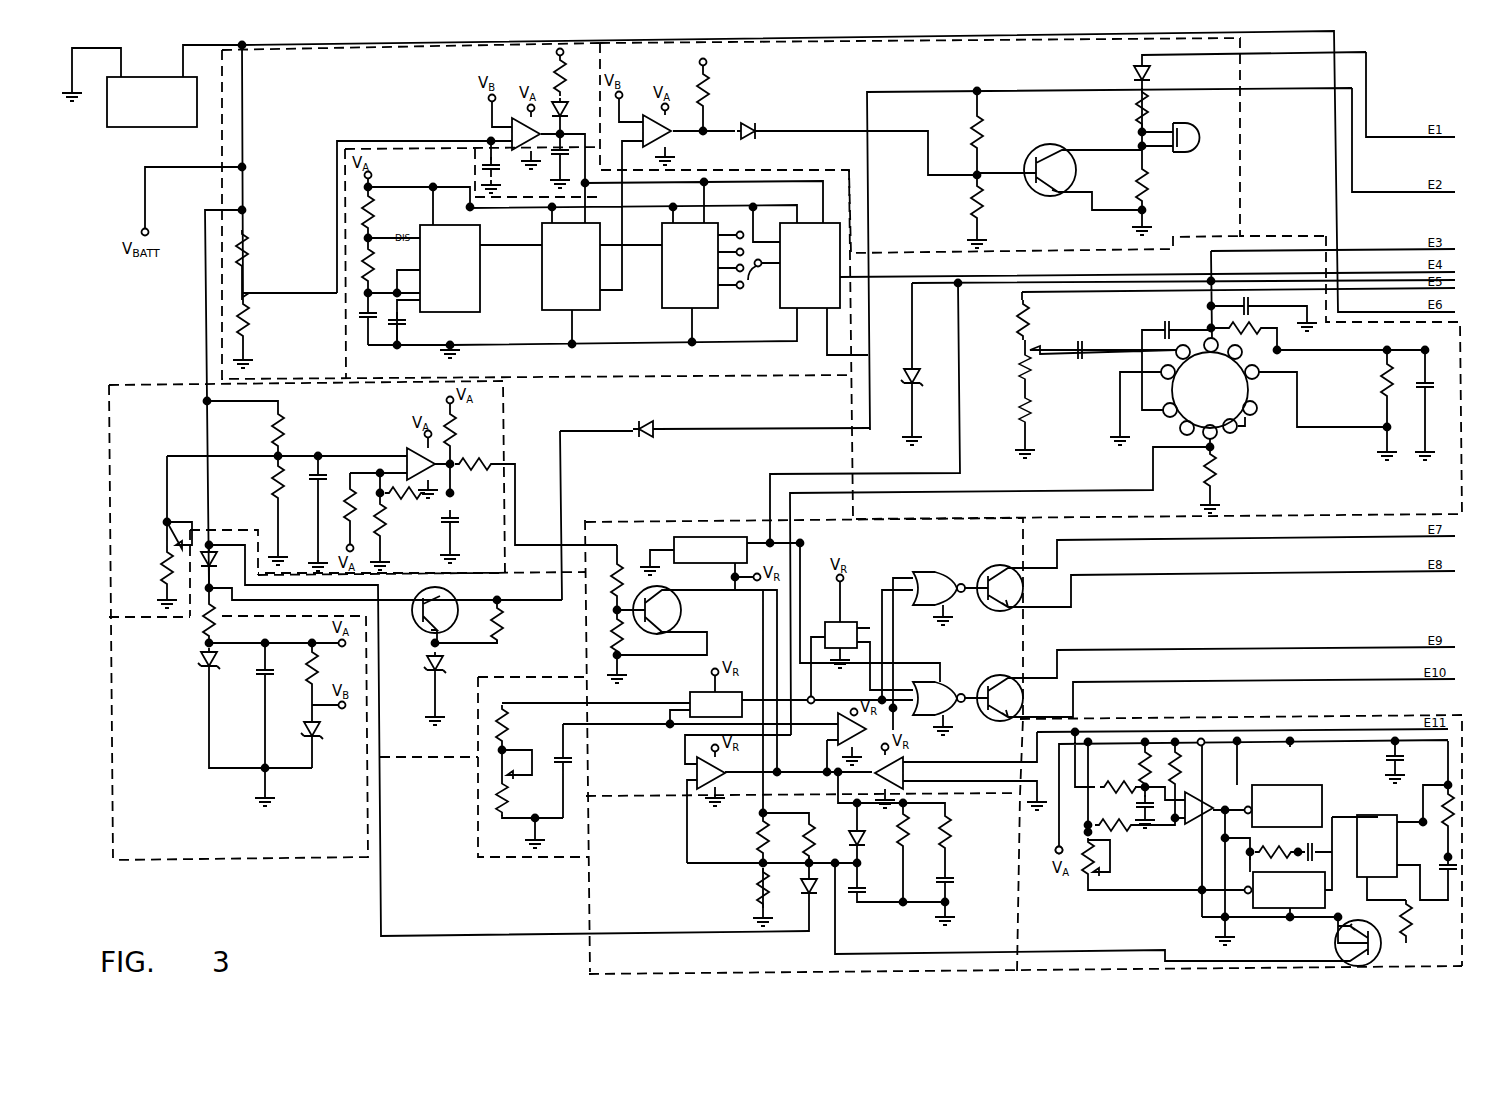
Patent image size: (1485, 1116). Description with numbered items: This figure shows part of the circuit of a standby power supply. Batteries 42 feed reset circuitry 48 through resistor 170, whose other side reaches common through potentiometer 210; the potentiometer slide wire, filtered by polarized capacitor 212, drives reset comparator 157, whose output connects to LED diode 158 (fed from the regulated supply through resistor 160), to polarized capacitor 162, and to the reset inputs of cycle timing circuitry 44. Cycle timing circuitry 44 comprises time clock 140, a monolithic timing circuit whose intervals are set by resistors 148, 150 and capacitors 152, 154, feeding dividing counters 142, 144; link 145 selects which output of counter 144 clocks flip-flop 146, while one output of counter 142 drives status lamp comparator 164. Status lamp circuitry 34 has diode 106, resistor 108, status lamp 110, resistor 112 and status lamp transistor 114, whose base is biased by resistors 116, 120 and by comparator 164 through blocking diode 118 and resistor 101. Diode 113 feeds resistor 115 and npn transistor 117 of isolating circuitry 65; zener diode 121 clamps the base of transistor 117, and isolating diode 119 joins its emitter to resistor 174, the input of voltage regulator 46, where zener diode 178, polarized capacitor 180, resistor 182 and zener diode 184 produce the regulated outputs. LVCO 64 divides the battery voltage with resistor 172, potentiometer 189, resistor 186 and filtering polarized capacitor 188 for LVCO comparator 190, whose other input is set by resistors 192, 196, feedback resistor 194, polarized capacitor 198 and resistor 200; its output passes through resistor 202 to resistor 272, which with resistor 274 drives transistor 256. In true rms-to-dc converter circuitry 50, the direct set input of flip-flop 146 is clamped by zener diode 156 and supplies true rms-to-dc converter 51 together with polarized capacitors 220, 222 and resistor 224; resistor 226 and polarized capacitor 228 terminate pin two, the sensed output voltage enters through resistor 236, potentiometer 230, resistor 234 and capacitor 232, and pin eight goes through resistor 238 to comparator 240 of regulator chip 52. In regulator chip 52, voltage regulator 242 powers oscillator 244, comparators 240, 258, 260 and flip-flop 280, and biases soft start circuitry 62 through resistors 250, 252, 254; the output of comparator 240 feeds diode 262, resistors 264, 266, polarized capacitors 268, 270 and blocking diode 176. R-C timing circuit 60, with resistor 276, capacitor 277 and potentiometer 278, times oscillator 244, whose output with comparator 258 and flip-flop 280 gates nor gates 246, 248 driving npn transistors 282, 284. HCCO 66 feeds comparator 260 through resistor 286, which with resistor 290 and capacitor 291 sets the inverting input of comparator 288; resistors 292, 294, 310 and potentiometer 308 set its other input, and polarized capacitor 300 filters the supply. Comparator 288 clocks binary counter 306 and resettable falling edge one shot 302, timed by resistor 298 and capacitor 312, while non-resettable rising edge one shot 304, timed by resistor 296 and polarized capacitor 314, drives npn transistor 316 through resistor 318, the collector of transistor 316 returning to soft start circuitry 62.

The batteries 42 is at (140, 127).
The reset circuitry 48 is at (537, 280).
The cycle timing circuitry 44 is at (472, 262).
The status lamp circuitry 34 is at (963, 145).
The true rms-to-dc converter circuitry 50 is at (1157, 377).
The resistor 170 is at (248, 247).
The potentiometer 210 is at (249, 317).
The resistor 148 is at (374, 210).
The resistor 150 is at (374, 262).
The capacitor 152 is at (364, 318).
The capacitor 154 is at (404, 325).
The time clock 140 is at (460, 312).
The counter 142 is at (542, 296).
The counter 144 is at (662, 296).
The link 145 is at (748, 280).
The flip-flop 146 is at (790, 308).
The reset comparator 157 is at (512, 125).
The polarized capacitor 212 is at (499, 172).
The LED diode 158 is at (552, 100).
The resistor 160 is at (556, 64).
The polarized capacitor 162 is at (550, 160).
The status lamp comparator 164 is at (668, 138).
The resistor 101 is at (708, 92).
The blocking diode 118 is at (748, 124).
The diode 106 is at (1150, 68).
The resistor 108 is at (1148, 103).
The status lamp 110 is at (1192, 152).
The resistor 112 is at (1148, 182).
The status lamp transistor 114 is at (1046, 196).
The resistor 116 is at (983, 130).
The resistor 120 is at (983, 200).
The zener diode 156 is at (921, 372).
The diode 113 is at (645, 437).
The resistor 236 is at (1031, 318).
The potentiometer 230 is at (1031, 366).
The resistor 234 is at (1031, 410).
The capacitor 232 is at (1082, 344).
The polarized capacitor 222 is at (1170, 312).
The polarized capacitor 220 is at (1250, 300).
The resistor 224 is at (1248, 322).
The polarized capacitor 228 is at (1428, 358).
The resistor 226 is at (1381, 378).
The true rms-to-dc converter 51 is at (1248, 390).
The resistor 238 is at (1216, 466).
The LVCO 64 is at (347, 619).
The resistor 172 is at (284, 428).
The resistor 186 is at (272, 482).
The filtering polarized capacitor 188 is at (312, 480).
The potentiometer 189 is at (160, 552).
The LVCO comparator 190 is at (410, 452).
The resistor 200 is at (456, 428).
The resistor 202 is at (470, 472).
The feedback resistor 194 is at (405, 499).
The resistor 192 is at (386, 520).
The resistor 196 is at (344, 500).
The polarized capacitor 198 is at (458, 524).
The isolating diode 119 is at (217, 566).
The resistor 174 is at (203, 618).
The npn transistor 117 is at (420, 625).
The resistor 115 is at (503, 622).
The zener diode 121 is at (444, 660).
The isolating circuitry 65 is at (485, 746).
The voltage regulator 46 is at (238, 738).
The zener diode 178 is at (201, 664).
The polarized capacitor 180 is at (260, 666).
The resistor 182 is at (318, 664).
The zener diode 184 is at (320, 728).
The regulator chip 52 is at (804, 745).
The R-C timing circuit 60 is at (533, 767).
The biasing and soft start circuitry 62 is at (1025, 936).
The HCCO 66 is at (1241, 840).
The voltage regulator 242 is at (716, 563).
The resistor 272 is at (622, 558).
The npn transistor 256 is at (681, 610).
The resistor 274 is at (623, 638).
The oscillator 244 is at (706, 692).
The comparator 258 is at (838, 730).
The comparator 240 is at (720, 780).
The comparator 260 is at (905, 772).
The flip-flop 280 is at (830, 622).
The nor gate 246 is at (939, 560).
The nor gate 248 is at (945, 680).
The npn transistor 282 is at (1004, 555).
The npn transistor 284 is at (1014, 664).
The resistor 276 is at (508, 720).
The capacitor 277 is at (558, 750).
The potentiometer 278 is at (508, 795).
The resistor 250 is at (757, 836).
The resistor 252 is at (815, 836).
The blocking diode 176 is at (803, 880).
The resistor 254 is at (757, 886).
The diode 262 is at (850, 830).
The resistor 264 is at (897, 815).
The resistor 266 is at (951, 832).
The polarized capacitor 268 is at (952, 882).
The polarized capacitor 270 is at (850, 892).
The resistor 290 is at (1139, 758).
The resistor 292 is at (1180, 750).
The resistor 286 is at (1118, 782).
The resistor 294 is at (1108, 819).
The resistor 310 is at (1094, 852).
The potentiometer 308 is at (1059, 880).
The comparator 288 is at (1195, 827).
The capacitor 291 is at (1150, 808).
The binary counter 306 is at (1270, 785).
The capacitor 312 is at (1282, 846).
The resistor 298 is at (1248, 860).
The resettable falling edge one shot 302 is at (1253, 900).
The non-resettable rising edge one shot 304 is at (1365, 815).
The polarized capacitor 300 is at (1388, 752).
The resistor 296 is at (1442, 825).
The polarized capacitor 314 is at (1452, 880).
The npn transistor 316 is at (1360, 908).
The resistor 318 is at (1412, 930).